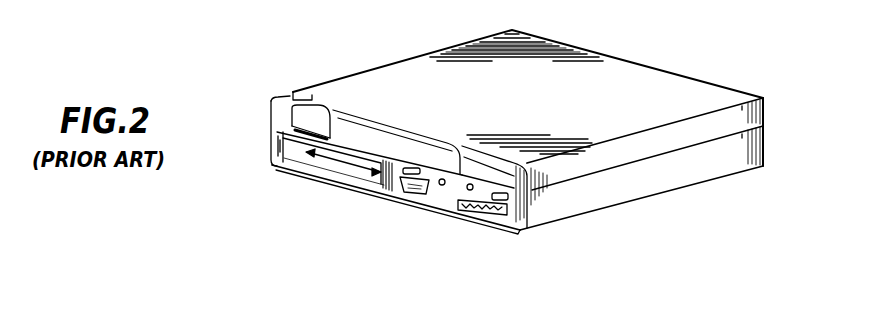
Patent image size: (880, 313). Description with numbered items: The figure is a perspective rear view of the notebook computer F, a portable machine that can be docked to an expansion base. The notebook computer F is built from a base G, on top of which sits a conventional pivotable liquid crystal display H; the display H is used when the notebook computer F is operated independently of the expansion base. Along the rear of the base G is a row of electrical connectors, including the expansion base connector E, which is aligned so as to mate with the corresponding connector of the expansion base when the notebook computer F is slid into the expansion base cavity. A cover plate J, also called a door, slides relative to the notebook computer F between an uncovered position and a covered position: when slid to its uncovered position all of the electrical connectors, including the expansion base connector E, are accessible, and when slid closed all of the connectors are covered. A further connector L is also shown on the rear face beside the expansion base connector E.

The pivotable liquid crystal display H is at (642, 86).
The base G is at (727, 160).
The notebook computer F is at (598, 219).
The cover plate J is at (315, 163).
The expansion base connector E is at (427, 196).
The connector L is at (497, 213).